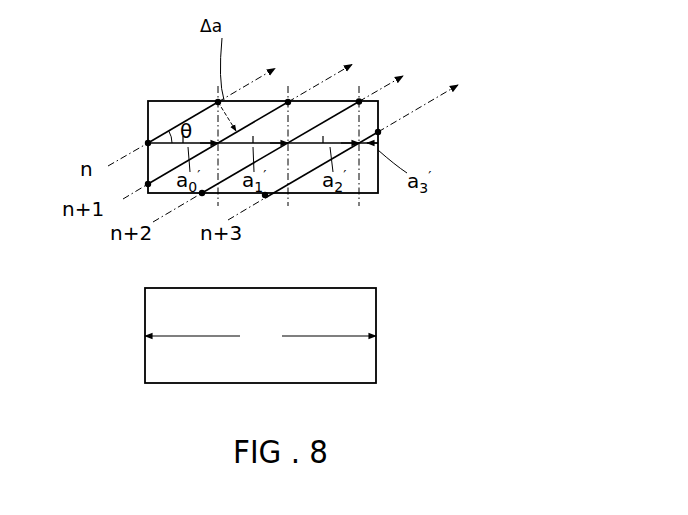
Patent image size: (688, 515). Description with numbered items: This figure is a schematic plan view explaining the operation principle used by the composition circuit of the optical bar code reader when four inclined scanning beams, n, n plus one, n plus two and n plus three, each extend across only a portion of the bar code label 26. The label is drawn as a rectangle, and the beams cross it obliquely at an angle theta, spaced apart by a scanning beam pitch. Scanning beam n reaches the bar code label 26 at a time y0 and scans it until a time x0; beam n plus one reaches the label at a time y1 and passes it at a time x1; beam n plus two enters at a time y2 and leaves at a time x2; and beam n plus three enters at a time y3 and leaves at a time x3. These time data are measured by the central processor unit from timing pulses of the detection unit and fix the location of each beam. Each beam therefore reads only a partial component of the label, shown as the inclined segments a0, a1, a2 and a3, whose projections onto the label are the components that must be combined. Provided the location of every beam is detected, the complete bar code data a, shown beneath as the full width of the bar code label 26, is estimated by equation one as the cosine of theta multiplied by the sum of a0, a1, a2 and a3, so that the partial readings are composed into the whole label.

The bar code label 26 is at (378, 196).
The complete bar code data a is at (260, 336).
The scanning beam n component a0 is at (187, 121).
The scanning beam n+1 component a1 is at (258, 120).
The scanning beam n+2 component a2 is at (325, 121).
The scanning beam n+3 component a3 is at (383, 108).
The passing time of scanning beam n x0 is at (217, 101).
The passing time of scanning beam n+1 x1 is at (288, 101).
The passing time of scanning beam n+2 x2 is at (359, 101).
The passing time of scanning beam n+3 x3 is at (380, 133).
The arrival time of scanning beam n y0 is at (148, 143).
The arrival time of scanning beam n+1 y1 is at (148, 184).
The arrival time of scanning beam n+2 y2 is at (202, 209).
The arrival time of scanning beam n+3 y3 is at (265, 210).